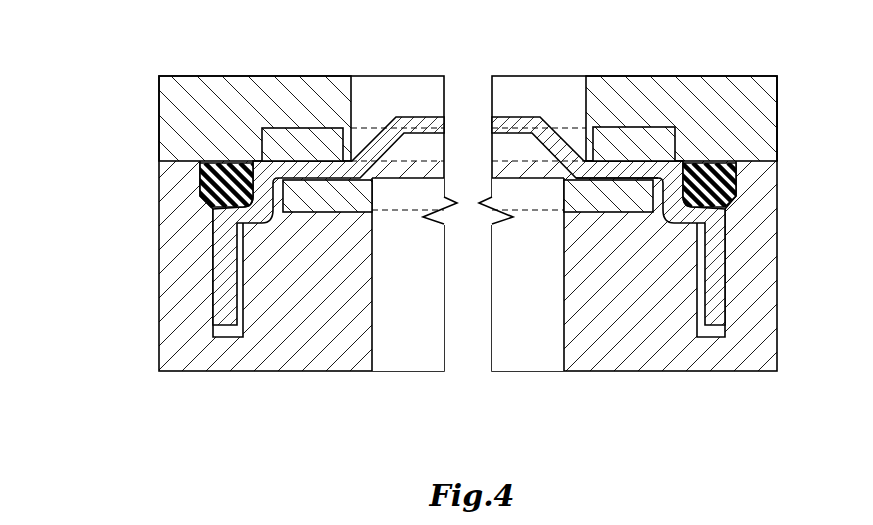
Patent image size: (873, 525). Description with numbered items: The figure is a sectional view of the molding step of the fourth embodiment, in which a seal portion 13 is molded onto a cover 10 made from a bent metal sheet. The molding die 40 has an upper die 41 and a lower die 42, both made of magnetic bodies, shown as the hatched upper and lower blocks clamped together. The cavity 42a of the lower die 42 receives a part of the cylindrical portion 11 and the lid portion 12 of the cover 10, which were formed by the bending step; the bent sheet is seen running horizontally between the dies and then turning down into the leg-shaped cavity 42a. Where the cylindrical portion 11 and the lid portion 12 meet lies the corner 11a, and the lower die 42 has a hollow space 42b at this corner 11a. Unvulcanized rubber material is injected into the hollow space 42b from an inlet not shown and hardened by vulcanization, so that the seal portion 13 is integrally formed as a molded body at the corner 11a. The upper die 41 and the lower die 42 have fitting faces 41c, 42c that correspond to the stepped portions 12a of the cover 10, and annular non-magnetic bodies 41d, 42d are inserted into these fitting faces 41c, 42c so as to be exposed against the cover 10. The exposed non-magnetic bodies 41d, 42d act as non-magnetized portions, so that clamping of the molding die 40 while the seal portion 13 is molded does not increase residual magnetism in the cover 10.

The cover 10 is at (548, 113).
The cylindrical portion 11 is at (712, 315).
The corner 11a is at (778, 93).
The lid portion 12 is at (413, 117).
The stepped portion 12a is at (603, 163).
The seal portion 13 is at (232, 163).
The molding die 40 is at (52, 140).
The upper die 41 is at (177, 139).
The fitting face of upper die 41c is at (313, 150).
The annular non-magnetic body 41d is at (650, 143).
The lower die 42 is at (177, 243).
The cavity 42a is at (238, 338).
The hollow space 42b is at (743, 180).
The fitting face of lower die 42c is at (333, 171).
The annular non-magnetic body 42d is at (617, 190).